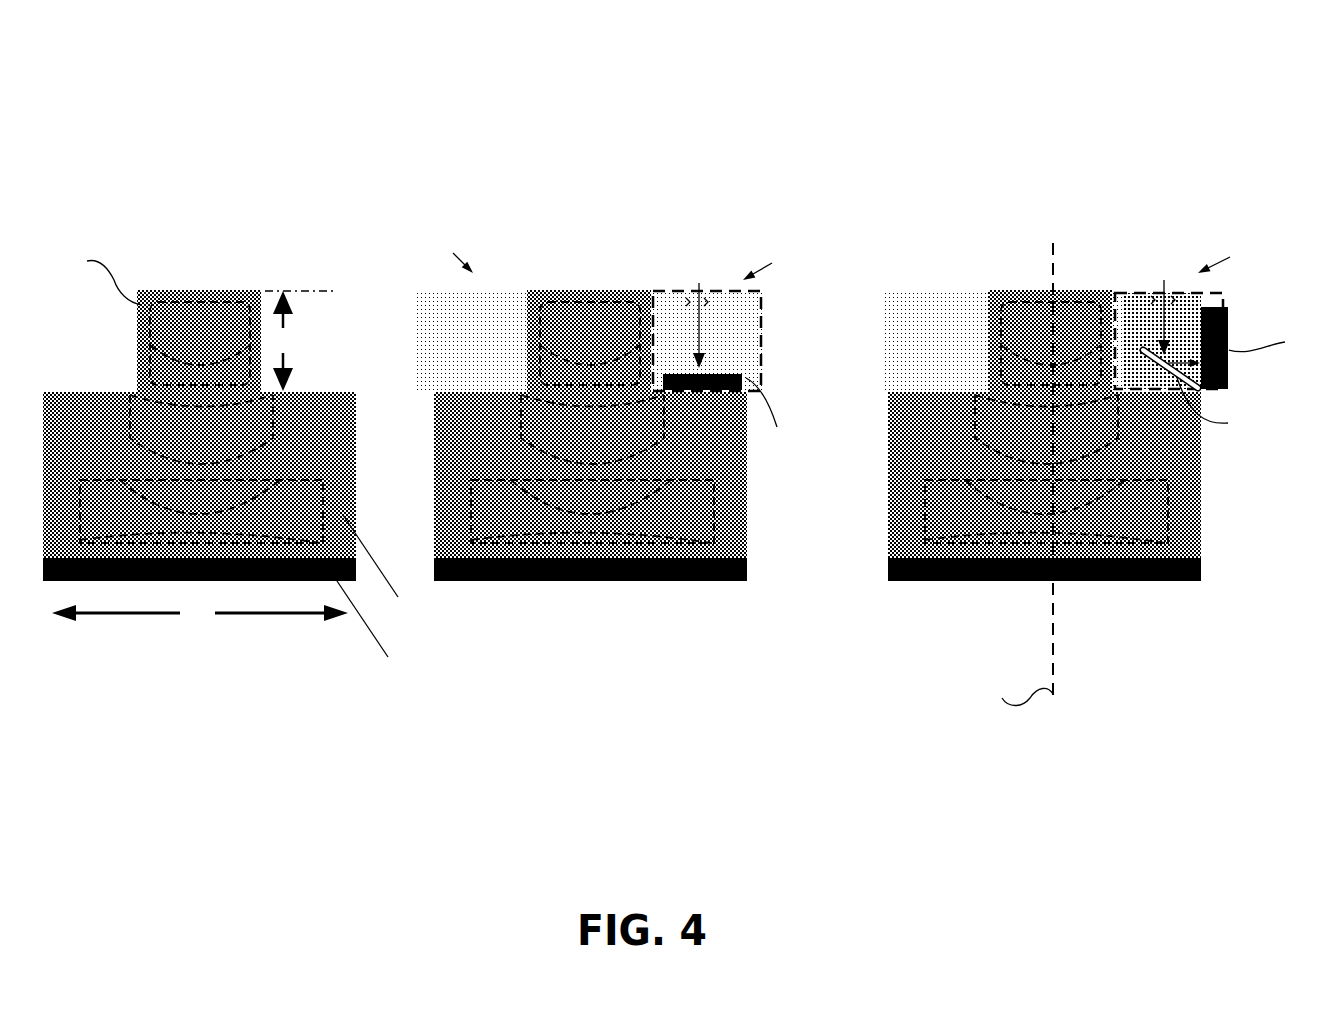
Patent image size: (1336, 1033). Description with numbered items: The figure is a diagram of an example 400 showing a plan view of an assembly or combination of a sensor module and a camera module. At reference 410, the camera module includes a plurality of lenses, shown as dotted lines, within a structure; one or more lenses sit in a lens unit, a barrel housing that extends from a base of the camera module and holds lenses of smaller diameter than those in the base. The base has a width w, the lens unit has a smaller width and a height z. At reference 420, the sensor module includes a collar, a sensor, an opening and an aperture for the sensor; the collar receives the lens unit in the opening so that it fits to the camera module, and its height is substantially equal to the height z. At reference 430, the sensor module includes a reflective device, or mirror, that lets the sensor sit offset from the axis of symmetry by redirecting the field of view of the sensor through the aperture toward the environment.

The example 400 is at (122, 48).
The camera module 410 is at (218, 216).
The sensor module 420 is at (598, 202).
The sensor module with reflective device 430 is at (973, 230).